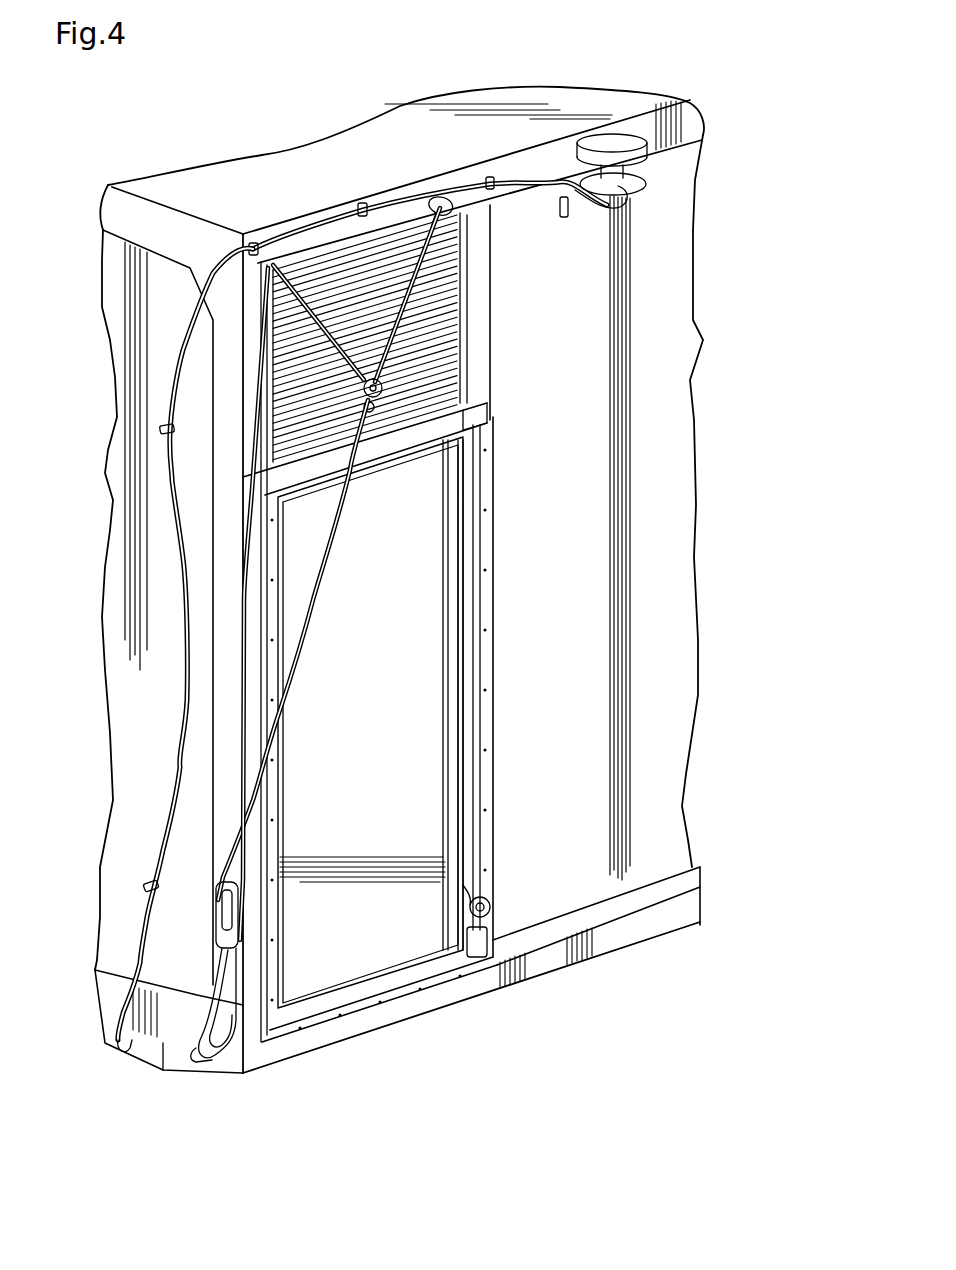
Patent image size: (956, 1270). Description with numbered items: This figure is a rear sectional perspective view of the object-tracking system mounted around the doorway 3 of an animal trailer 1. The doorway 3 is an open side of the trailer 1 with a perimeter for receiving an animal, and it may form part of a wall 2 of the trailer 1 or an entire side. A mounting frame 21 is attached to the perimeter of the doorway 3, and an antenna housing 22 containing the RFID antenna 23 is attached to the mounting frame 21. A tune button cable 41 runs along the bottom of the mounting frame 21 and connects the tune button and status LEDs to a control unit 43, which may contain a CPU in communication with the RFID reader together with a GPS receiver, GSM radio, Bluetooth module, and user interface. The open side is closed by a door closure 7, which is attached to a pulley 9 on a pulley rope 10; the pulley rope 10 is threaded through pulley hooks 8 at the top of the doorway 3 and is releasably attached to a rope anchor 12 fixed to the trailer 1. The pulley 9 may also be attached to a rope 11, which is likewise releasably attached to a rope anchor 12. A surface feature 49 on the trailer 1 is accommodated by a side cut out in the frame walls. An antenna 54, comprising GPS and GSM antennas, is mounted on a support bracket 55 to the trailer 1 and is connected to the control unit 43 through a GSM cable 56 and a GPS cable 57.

The animal trailer 1 is at (240, 200).
The wall 2 is at (645, 496).
The doorway 3 is at (410, 502).
The door closure 7 is at (263, 360).
The pulley hooks 8 is at (443, 197).
The pulley 9 is at (413, 203).
The pulley rope 10 is at (320, 260).
The rope 11 is at (322, 565).
The rope anchor 12 is at (213, 928).
The mounting frame 21 is at (470, 405).
The antenna housing 22 is at (487, 603).
The RFID antenna 23 is at (273, 1027).
The tune button cable 41 is at (223, 1057).
The control unit 43 is at (150, 1057).
The surface feature 49 is at (492, 902).
The antenna 54 is at (620, 137).
The support bracket 55 is at (647, 181).
The GSM cable 56 is at (183, 684).
The GPS cable 57 is at (188, 713).